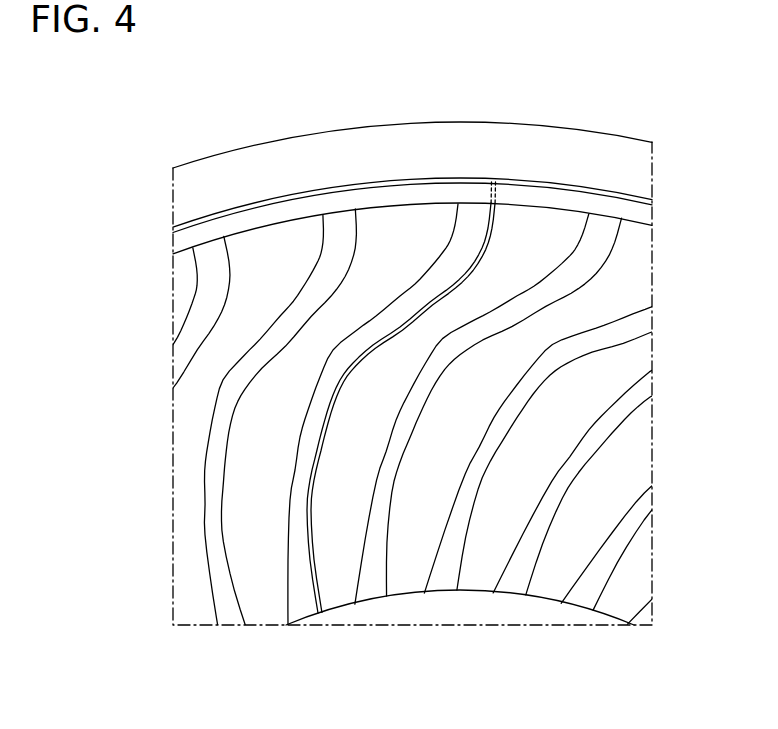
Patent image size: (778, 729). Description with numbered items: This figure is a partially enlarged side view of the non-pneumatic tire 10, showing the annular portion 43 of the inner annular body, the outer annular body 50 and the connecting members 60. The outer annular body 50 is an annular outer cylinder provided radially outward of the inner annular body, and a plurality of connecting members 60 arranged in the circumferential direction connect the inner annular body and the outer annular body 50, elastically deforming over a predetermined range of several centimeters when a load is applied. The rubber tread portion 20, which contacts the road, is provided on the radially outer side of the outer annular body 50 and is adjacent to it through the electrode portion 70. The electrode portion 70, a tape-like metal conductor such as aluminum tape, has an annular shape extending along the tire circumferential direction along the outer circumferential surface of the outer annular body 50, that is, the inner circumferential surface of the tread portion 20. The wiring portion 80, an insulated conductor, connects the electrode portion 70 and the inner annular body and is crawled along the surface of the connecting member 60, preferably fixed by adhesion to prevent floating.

The non-pneumatic tire 10 is at (575, 114).
The tread portion 20 is at (463, 146).
The annular portion 43 is at (458, 612).
The outer annular body 50 is at (400, 193).
The connecting member 60 is at (458, 249).
The electrode portion 70 is at (612, 190).
The wiring portion 80 is at (371, 360).